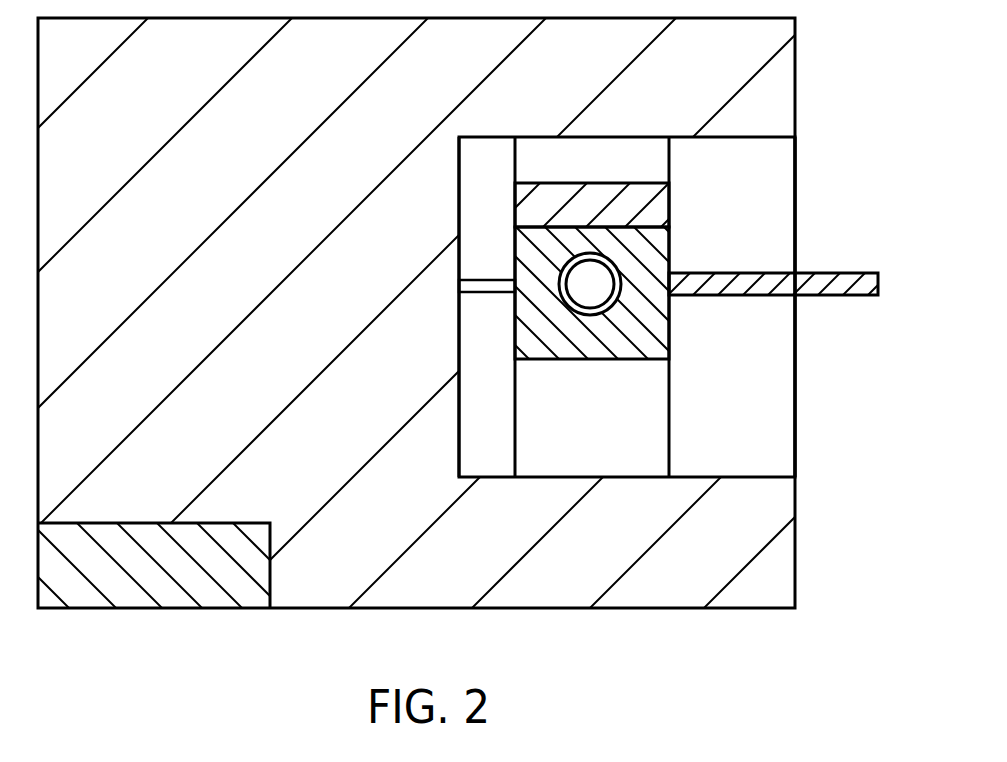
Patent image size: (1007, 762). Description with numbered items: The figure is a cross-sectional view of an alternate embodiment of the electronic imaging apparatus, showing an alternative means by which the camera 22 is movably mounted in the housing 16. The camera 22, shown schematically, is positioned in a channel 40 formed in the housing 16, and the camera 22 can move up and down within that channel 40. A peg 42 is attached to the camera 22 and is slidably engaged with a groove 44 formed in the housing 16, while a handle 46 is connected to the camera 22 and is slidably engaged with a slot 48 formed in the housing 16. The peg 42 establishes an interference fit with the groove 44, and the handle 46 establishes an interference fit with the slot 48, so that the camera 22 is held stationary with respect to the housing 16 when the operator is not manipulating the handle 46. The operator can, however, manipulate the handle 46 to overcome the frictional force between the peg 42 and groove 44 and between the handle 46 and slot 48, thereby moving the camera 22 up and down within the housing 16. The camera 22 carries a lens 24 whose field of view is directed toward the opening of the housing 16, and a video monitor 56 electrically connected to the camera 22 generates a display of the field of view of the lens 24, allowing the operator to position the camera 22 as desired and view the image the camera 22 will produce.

The housing 16 is at (732, 593).
The camera 22 is at (543, 253).
The lens 24 is at (617, 270).
The channel 40 is at (643, 155).
The peg 42 is at (487, 279).
The groove 44 is at (473, 166).
The handle 46 is at (833, 273).
The slot 48 is at (785, 195).
The video monitor 56 is at (652, 200).